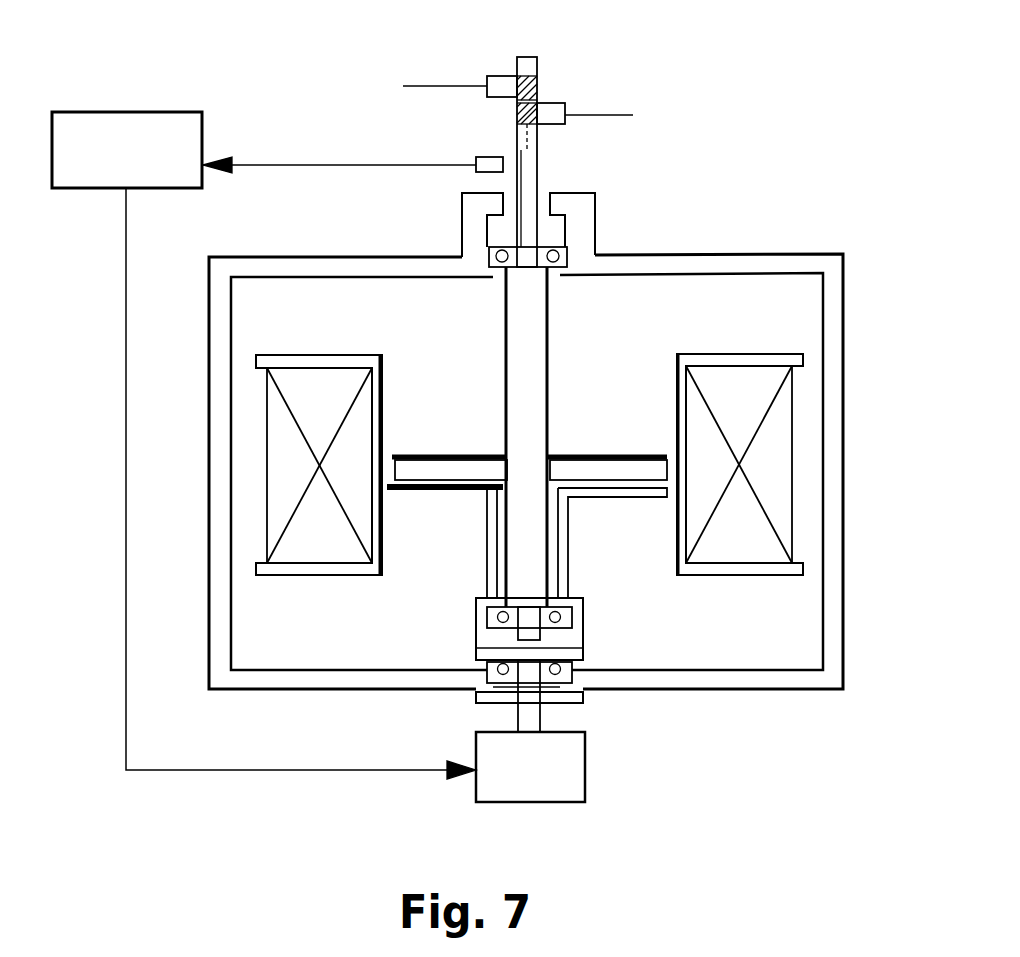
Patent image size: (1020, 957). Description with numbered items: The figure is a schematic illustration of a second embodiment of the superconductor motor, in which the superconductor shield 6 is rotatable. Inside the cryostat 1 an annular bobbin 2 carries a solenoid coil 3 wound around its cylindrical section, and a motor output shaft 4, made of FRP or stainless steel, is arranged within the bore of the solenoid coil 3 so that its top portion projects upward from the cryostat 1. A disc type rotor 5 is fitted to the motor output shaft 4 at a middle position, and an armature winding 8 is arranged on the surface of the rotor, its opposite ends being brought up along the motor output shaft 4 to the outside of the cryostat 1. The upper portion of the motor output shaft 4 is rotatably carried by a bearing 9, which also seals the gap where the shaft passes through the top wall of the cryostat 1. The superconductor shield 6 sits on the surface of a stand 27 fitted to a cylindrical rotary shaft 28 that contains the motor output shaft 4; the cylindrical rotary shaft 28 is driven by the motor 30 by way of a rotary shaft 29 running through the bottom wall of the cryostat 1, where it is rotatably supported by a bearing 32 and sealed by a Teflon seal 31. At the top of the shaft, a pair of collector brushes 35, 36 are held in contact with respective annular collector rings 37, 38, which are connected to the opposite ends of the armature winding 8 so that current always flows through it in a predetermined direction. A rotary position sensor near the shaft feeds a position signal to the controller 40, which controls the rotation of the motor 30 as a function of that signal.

The cryostat 1 is at (298, 263).
The annular bobbin 2 is at (308, 355).
The solenoid coil 3 is at (315, 553).
The motor output shaft 4 is at (533, 568).
The disc type rotor 5 is at (598, 470).
The superconductor shield 6 is at (447, 383).
The armature winding 8 is at (520, 355).
The bearing 9 is at (563, 253).
The stand 27 is at (635, 493).
The cylindrical rotary shaft 28 is at (493, 563).
The rotary shaft 29 is at (497, 618).
The motor 30 is at (560, 775).
The seal 31 is at (493, 697).
The bearing 32 is at (487, 672).
The collector brush 35 is at (553, 123).
The collector brush 36 is at (488, 75).
The collector ring 37 is at (537, 102).
The collector ring 38 is at (537, 77).
The controller 40 is at (175, 110).